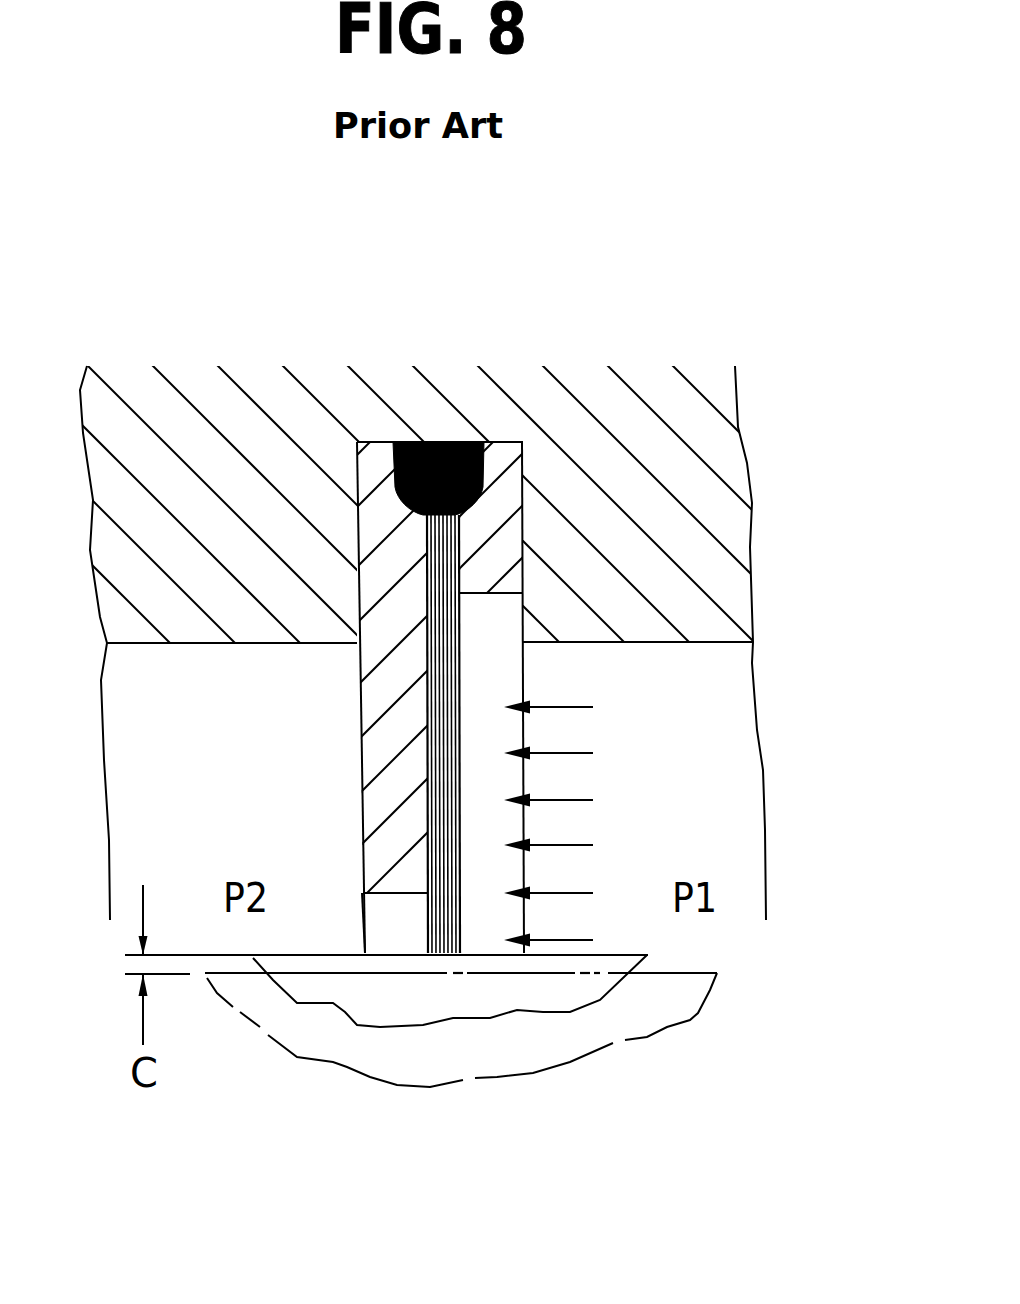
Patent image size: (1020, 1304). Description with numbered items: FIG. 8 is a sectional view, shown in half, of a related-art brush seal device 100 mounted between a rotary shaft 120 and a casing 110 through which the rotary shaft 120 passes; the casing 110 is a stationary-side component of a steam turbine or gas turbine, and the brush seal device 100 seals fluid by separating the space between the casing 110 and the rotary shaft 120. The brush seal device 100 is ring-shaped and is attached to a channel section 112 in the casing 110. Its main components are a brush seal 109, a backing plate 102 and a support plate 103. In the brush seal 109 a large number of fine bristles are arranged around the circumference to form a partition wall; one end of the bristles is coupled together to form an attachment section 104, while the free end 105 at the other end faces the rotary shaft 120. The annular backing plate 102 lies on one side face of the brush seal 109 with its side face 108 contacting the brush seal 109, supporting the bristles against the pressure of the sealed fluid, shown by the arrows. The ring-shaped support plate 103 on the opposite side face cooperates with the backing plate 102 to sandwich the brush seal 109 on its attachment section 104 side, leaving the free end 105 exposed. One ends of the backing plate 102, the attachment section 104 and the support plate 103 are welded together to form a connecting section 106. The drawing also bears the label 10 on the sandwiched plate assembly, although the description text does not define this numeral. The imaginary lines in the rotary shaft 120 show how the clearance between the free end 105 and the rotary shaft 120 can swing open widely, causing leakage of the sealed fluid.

The brush seal device 100 is at (784, 405).
The backing plate 102 is at (320, 532).
The support plate 103 is at (500, 497).
The attachment section 104 is at (470, 443).
The free end 105 is at (395, 1019).
The connecting section 106 is at (510, 630).
The side face 108 is at (547, 734).
The brush seal 109 is at (838, 688).
The casing 110 is at (802, 745).
The channel section 112 is at (531, 603).
The rotary shaft 120 is at (495, 1183).
The terminal 10 is at (359, 697).